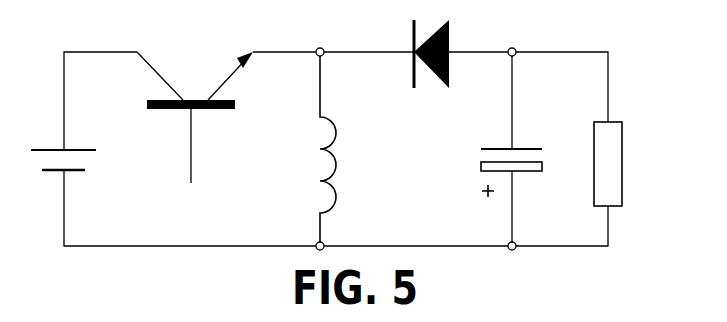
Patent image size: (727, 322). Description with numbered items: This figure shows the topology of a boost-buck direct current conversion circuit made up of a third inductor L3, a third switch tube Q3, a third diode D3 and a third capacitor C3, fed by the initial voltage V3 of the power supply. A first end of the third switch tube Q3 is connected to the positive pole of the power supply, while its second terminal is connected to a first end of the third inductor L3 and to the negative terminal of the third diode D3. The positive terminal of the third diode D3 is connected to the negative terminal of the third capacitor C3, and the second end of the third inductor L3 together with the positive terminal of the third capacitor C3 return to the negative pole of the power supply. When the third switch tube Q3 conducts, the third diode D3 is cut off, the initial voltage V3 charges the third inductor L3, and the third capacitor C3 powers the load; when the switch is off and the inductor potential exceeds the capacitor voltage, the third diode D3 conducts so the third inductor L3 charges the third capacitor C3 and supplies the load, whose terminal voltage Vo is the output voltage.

The third switch tube Q3 is at (195, 111).
The initial voltage V3 is at (78, 164).
The third inductor L3 is at (307, 149).
The third diode D3 is at (431, 73).
The third capacitor C3 is at (491, 149).
The output voltage Vo is at (630, 164).